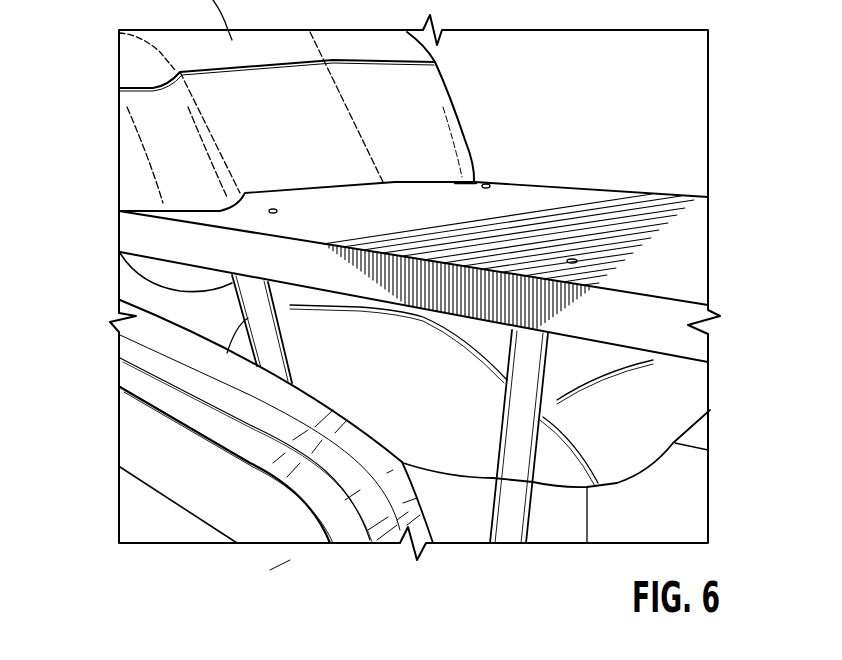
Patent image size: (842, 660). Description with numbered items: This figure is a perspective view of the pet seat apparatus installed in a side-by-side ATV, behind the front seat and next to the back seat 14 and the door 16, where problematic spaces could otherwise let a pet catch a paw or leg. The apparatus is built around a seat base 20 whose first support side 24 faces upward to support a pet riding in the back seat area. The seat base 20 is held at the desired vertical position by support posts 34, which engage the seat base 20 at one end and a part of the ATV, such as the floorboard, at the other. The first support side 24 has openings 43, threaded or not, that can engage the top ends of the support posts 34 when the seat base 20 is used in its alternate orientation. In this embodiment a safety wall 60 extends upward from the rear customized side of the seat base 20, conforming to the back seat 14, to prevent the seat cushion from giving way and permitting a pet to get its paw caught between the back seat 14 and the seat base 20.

The back seat 14 is at (414, 356).
The door 16 is at (153, 437).
The seat base 20 is at (640, 202).
The first support side 24 is at (471, 217).
The support post 34 is at (267, 342).
The opening 43 is at (277, 210).
The safety wall 60 is at (437, 90).